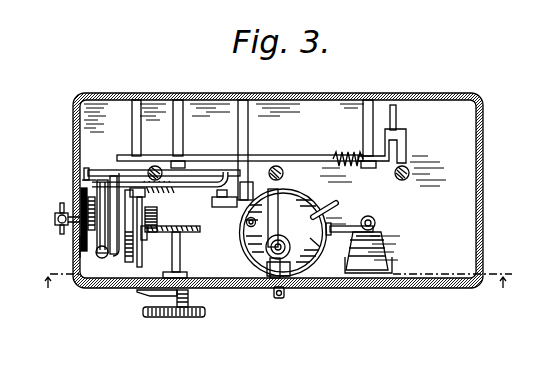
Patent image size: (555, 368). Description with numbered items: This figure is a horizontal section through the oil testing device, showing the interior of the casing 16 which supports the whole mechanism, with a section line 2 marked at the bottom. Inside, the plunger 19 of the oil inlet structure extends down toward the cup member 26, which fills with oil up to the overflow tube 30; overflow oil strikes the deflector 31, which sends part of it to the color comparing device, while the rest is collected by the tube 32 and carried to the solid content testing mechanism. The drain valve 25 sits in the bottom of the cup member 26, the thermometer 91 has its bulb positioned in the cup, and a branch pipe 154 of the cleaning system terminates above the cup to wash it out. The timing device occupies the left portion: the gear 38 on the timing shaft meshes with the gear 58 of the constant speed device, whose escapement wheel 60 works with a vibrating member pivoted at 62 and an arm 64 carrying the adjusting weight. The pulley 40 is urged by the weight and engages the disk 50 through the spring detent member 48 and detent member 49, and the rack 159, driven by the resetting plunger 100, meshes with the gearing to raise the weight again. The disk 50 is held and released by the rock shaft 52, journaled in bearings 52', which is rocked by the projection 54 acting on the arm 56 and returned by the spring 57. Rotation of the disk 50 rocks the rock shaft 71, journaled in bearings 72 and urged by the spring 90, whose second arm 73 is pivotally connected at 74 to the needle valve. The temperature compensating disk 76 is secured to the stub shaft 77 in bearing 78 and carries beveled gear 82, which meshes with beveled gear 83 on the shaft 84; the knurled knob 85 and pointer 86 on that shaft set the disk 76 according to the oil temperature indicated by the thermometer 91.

The casing 16 is at (487, 181).
The section line 2- 2 is at (278, 277).
The rock shaft 52 is at (240, 143).
The bearings 52' is at (273, 134).
The bearings 72 is at (250, 140).
The spring 57 is at (340, 152).
The arm 56 is at (397, 113).
The projection 54 is at (408, 152).
The plunger 19 is at (284, 174).
The spring 90 is at (158, 164).
The resetting plunger 100 is at (158, 183).
The rock shaft 71 is at (188, 193).
The pivot 62 is at (55, 221).
The arm 64 is at (58, 215).
The escapement wheel 60 is at (60, 232).
The gear 38 is at (78, 247).
The gear 58 is at (80, 212).
The pulley 40 is at (80, 173).
The rack 159 is at (80, 181).
The spring detent member 48 is at (108, 180).
The detent member 49 is at (108, 258).
The disk 50 is at (112, 258).
The disk 76 is at (128, 264).
The stub shaft 77 is at (141, 250).
The bearing 78 is at (144, 231).
The beveled gear 82 is at (151, 214).
The beveled gear 83 is at (185, 240).
The shaft 84 is at (180, 266).
The second arm 73 is at (273, 212).
The drain valve 25 is at (246, 231).
The thermometer 91 is at (289, 282).
The branch pipe 154 is at (313, 248).
The pivotal connection 74 is at (274, 294).
The cup member 26 is at (313, 203).
The overflow tube 30 is at (348, 226).
The tube 32 is at (376, 222).
The deflector 31 is at (385, 247).
The pointer 86 is at (165, 317).
The knurled knob 85 is at (203, 314).